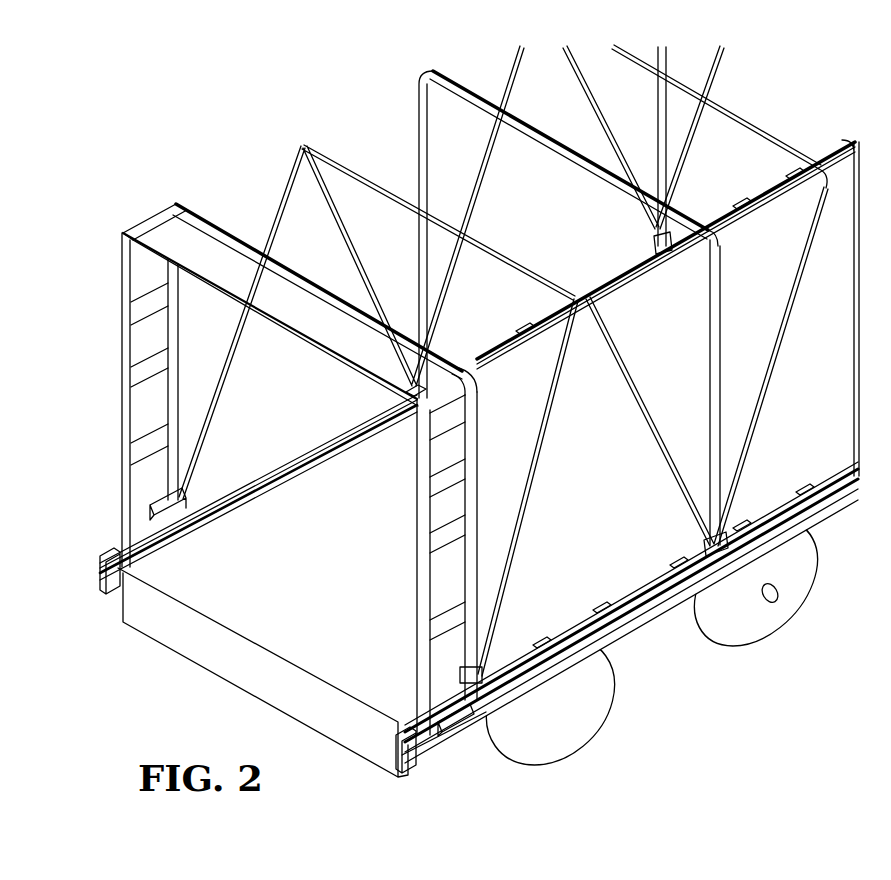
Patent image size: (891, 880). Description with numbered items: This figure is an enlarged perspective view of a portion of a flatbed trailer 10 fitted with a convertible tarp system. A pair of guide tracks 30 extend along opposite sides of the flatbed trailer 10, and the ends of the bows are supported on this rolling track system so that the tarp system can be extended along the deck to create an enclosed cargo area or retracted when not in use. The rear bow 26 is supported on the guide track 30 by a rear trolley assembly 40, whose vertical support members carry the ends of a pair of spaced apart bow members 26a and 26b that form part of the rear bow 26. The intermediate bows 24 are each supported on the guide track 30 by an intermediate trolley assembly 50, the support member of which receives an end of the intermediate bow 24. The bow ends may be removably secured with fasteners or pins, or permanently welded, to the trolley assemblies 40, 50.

The flatbed trailer 10 is at (287, 617).
The intermediate bow 24 is at (664, 133).
The rear bow 26 is at (420, 524).
The bow member 26a is at (430, 634).
The bow member 26b is at (120, 411).
The guide track 30 is at (88, 569).
The rear trolley assembly 40 is at (158, 524).
The intermediate trolley assembly 50 is at (406, 402).